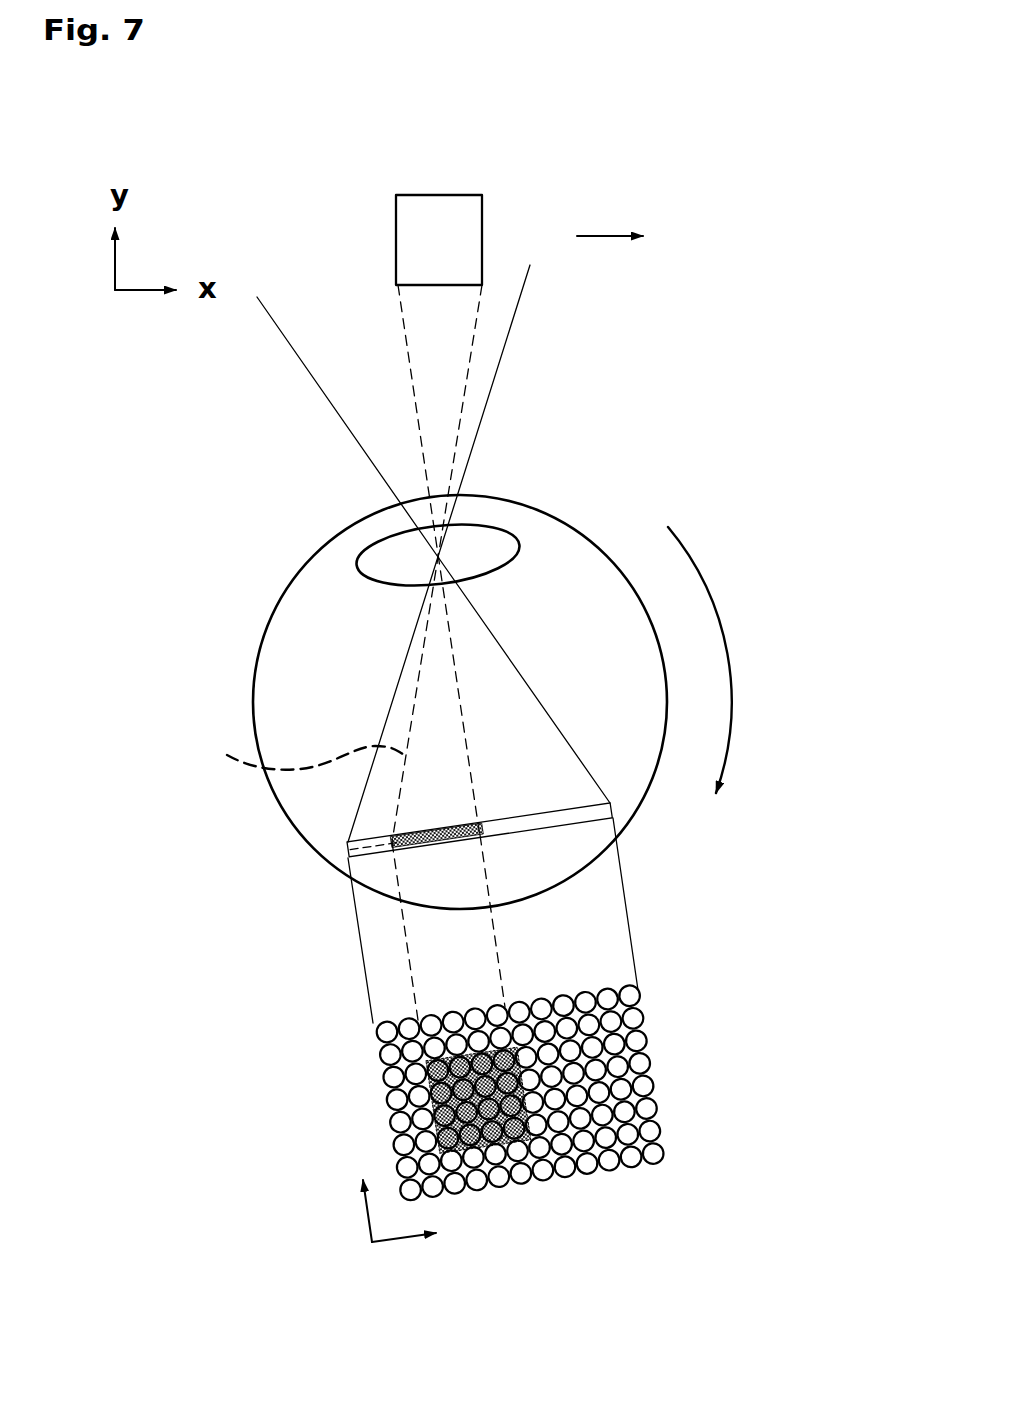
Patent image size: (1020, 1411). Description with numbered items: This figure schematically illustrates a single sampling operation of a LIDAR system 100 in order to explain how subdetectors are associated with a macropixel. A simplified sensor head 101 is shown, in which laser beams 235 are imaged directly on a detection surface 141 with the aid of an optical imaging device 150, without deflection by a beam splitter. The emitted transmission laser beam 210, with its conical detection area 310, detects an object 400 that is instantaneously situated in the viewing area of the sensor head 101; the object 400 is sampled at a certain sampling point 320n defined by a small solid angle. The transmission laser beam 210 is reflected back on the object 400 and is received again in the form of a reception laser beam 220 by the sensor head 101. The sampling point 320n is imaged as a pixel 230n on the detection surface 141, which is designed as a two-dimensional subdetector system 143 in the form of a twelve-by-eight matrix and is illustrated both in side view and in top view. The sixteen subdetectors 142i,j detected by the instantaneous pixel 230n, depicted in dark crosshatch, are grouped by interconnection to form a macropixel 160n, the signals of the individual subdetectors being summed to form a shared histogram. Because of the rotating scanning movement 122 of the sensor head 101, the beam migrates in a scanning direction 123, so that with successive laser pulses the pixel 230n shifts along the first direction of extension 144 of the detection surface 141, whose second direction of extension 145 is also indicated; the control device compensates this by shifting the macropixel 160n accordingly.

The object 400 is at (567, 174).
The sampling point 320n is at (396, 212).
The scanning direction 123 is at (607, 237).
The transmission laser beam 210 is at (307, 368).
The detection area 310 is at (494, 378).
The reception laser beam 220 is at (516, 668).
The LIDAR system 100 is at (170, 616).
The sensor head 101 is at (254, 673).
The optical imaging device 150 is at (360, 565).
The scanning movement 122 is at (728, 648).
The laser beams 235 is at (290, 758).
The detection surface 141 is at (598, 813).
The subdetectors 142i,j is at (637, 1060).
The macropixel 160n is at (423, 832).
The pixel 230n is at (345, 852).
The second direction of extension 145 is at (367, 1221).
The first direction of extension 144 is at (400, 1240).
The subdetector system 143 is at (648, 1218).